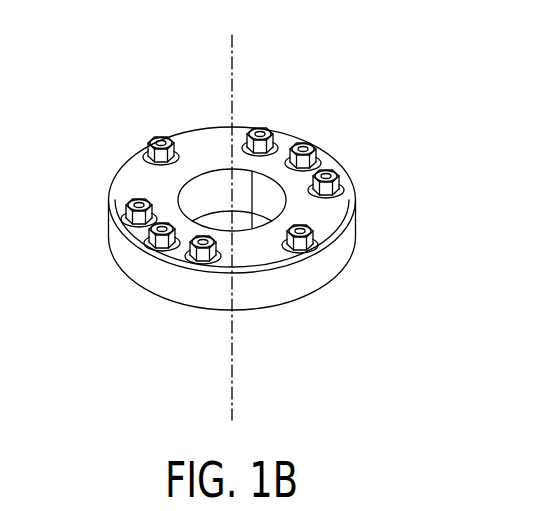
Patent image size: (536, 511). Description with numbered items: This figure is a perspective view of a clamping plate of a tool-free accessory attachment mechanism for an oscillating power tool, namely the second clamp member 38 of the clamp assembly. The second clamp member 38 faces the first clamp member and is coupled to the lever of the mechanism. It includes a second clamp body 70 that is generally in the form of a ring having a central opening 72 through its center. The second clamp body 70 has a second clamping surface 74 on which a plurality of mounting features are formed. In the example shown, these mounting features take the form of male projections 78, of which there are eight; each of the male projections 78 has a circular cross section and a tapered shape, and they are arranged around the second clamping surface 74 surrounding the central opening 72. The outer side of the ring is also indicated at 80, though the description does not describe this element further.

The second clamp member 38 is at (187, 287).
The second clamp body 70 is at (209, 224).
The central opening 72 is at (261, 196).
The second clamping surface 74 is at (215, 173).
The male projections 78 is at (151, 141).
The outer side surface 80 is at (126, 279).